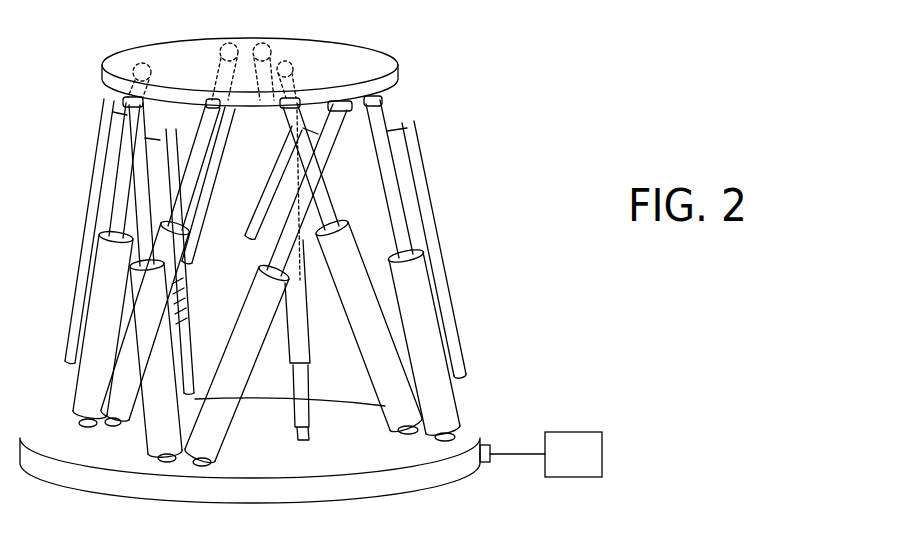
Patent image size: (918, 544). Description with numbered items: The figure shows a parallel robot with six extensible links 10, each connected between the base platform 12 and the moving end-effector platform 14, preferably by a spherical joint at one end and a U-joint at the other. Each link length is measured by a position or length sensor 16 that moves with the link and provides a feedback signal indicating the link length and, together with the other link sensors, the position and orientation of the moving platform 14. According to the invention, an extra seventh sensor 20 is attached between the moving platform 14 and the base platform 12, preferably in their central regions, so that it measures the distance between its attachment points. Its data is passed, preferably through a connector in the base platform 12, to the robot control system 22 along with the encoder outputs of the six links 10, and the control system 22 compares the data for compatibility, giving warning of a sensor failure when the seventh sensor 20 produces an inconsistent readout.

The extensible links 10 is at (369, 267).
The base platform 12 is at (468, 426).
The moving end-effector platform 14 is at (399, 73).
The position or length sensor 16 is at (452, 292).
The seventh sensor 20 is at (312, 347).
The robot control system 22 is at (587, 466).